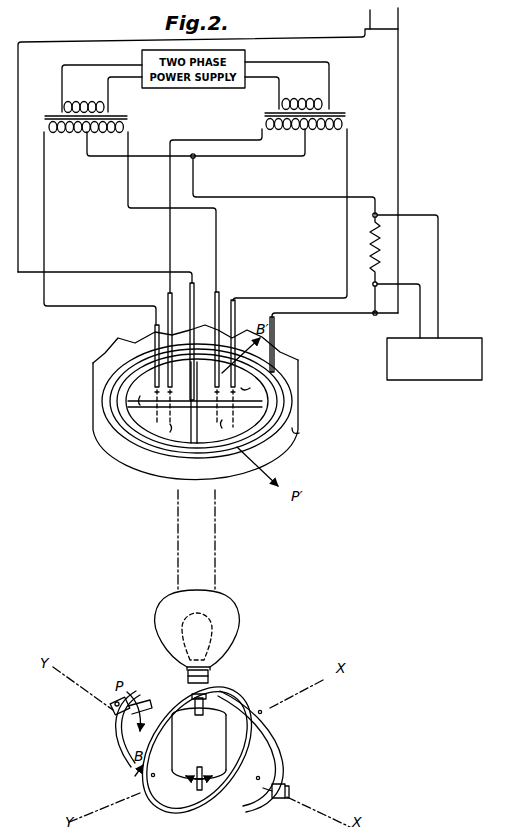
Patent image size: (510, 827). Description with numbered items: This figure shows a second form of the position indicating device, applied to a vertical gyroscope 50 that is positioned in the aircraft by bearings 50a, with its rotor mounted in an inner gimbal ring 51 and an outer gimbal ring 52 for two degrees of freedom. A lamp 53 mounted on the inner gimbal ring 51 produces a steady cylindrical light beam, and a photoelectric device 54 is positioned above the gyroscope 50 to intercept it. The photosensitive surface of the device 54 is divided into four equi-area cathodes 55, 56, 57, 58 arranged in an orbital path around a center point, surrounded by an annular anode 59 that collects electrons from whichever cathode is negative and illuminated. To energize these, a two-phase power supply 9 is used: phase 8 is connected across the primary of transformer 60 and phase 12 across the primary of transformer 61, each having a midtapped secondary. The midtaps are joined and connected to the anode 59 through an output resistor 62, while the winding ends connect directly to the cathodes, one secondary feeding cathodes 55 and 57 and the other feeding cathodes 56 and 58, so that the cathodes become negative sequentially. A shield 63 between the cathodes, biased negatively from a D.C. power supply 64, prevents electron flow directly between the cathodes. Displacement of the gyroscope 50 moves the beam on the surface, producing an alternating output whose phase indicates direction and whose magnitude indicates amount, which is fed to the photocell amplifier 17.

The phase 8 is at (327, 80).
The two-phase power supply 9 is at (250, 51).
The phase 12 is at (109, 80).
The photocell amplifier 17 is at (472, 340).
The vertical gyroscope 50 is at (205, 747).
The bearings 50a is at (112, 712).
The inner gimbal ring 51 is at (238, 694).
The outer gimbal ring 52 is at (285, 722).
The lamp 53 is at (216, 622).
The photoelectric device 54 is at (300, 435).
The cathode 55 is at (170, 432).
The cathode 56 is at (222, 428).
The cathode 57 is at (250, 388).
The cathode 58 is at (133, 401).
The annular anode 59 is at (127, 445).
The transformer 60 is at (77, 101).
The transformer 61 is at (315, 98).
The output resistor 62 is at (370, 247).
The shield 63 is at (187, 408).
The D.C. power supply 64 is at (400, 22).